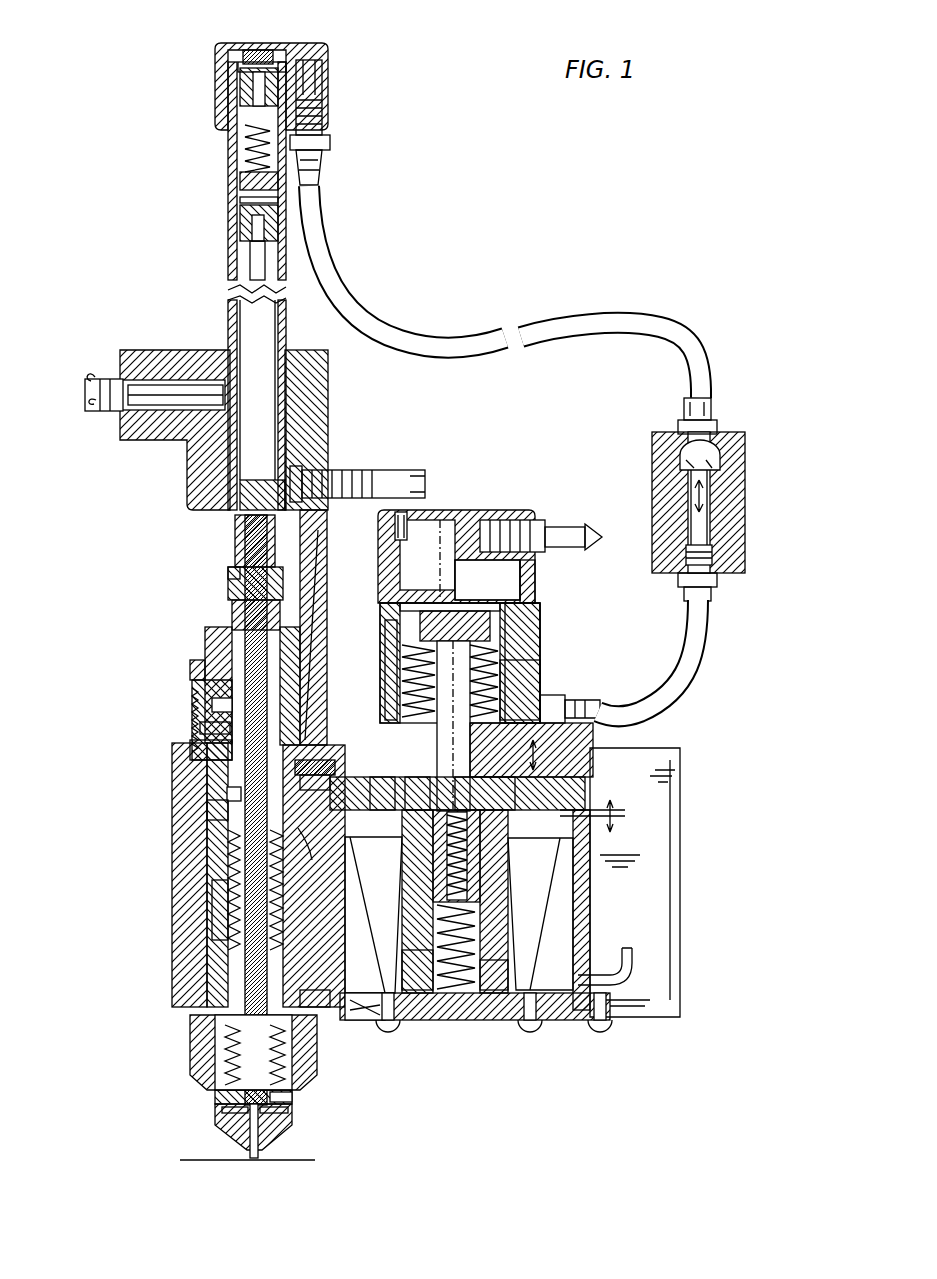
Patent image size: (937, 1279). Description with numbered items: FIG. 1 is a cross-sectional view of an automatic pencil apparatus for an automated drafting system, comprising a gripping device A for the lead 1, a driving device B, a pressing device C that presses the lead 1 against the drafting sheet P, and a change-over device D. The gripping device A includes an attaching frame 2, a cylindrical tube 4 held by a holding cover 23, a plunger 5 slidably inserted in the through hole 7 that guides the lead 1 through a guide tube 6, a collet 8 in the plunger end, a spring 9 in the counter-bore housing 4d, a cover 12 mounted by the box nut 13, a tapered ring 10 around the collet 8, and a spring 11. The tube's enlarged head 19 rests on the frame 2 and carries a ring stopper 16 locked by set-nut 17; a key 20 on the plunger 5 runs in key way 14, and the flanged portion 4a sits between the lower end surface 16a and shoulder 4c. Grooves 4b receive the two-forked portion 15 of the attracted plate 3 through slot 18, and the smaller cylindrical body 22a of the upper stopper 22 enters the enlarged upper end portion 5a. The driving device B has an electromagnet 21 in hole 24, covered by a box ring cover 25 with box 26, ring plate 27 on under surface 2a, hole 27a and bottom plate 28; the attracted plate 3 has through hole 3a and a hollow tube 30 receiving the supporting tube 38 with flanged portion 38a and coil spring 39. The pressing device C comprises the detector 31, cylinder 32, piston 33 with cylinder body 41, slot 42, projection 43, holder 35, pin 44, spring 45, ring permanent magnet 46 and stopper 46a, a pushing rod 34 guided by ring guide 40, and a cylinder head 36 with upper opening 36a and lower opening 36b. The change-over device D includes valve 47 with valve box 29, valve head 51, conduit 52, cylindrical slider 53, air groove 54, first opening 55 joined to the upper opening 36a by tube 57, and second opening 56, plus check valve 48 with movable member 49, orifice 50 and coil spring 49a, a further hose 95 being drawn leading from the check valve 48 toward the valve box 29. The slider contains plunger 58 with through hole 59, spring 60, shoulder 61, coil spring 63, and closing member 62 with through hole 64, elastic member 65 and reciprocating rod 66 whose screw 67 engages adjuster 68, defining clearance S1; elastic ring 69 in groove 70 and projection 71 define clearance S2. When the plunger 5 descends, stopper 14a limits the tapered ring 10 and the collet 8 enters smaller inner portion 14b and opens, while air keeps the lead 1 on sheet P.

The lead 1 is at (248, 955).
The attaching frame 2 is at (310, 600).
The under surface of the frame 2a is at (322, 1010).
The attracted plate 3 is at (590, 800).
The through hole 3a is at (510, 800).
The cylindrical tube 4 is at (200, 985).
The flanged portion 4a is at (224, 712).
The grooves 4b is at (227, 790).
The shoulder 4c is at (220, 728).
The counter-bore housing 4d is at (225, 915).
The plunger 5 is at (228, 585).
The enlarged upper end portion of the plunger 5a is at (312, 565).
The guide tube 6 is at (245, 607).
The through hole 7 is at (218, 810).
The collet 8 is at (292, 1098).
The spring 9 is at (230, 855).
The tapered ring 10 is at (225, 1097).
The spring 11 is at (225, 1070).
The cover 12 is at (275, 1125).
The box nut 13 is at (195, 1045).
The key way 14 is at (300, 740).
The stopper 14a is at (230, 1110).
The smaller inner portion of the cover 14b is at (290, 1110).
The two-forked portion 15 is at (312, 768).
The ring stopper 16 is at (210, 630).
The lower end surface of the stopper 16a is at (225, 703).
The set-nut 17 is at (192, 668).
The slot 18 is at (322, 790).
The enlarged head 19 is at (205, 755).
The key 20 is at (312, 845).
The electromagnet 21 is at (568, 990).
The upper stopper 22 is at (235, 527).
The smaller cylindrical body of the upper stopper 22a is at (228, 567).
The holding cover 23 is at (180, 840).
The hole 24 is at (375, 862).
The box ring cover 25 is at (585, 920).
The box 26 is at (508, 890).
The ring plate 27 is at (510, 1020).
The hole of the ring plate 27a is at (430, 1020).
The bottom plate 28 is at (475, 1017).
The valve box 29 is at (540, 665).
The hollow tube 30 is at (410, 930).
The detector 31 is at (160, 400).
The cylinder 32 is at (300, 382).
The piston 33 is at (240, 165).
The pushing rod 34 is at (285, 395).
The holder 35 is at (252, 242).
The cylinder head 36 is at (312, 46).
The upper opening 36a is at (310, 82).
The lower opening 36b is at (300, 470).
The supporting tube 38 is at (475, 940).
The flanged portion 38a is at (500, 985).
The coil spring 39 is at (418, 960).
The ring guide 40 is at (240, 490).
The cylinder body 41 is at (232, 178).
The slot 42 is at (240, 200).
The projection 43 is at (240, 92).
The pin 44 is at (240, 225).
The spring 45 is at (245, 140).
The ring permanent magnet 46 is at (228, 68).
The stopper 46a is at (258, 52).
The valve 47 is at (583, 660).
The check valve 48 is at (730, 462).
The movable member 49 is at (690, 462).
The coil spring 49a is at (690, 430).
The orifice 50 is at (695, 480).
The valve head 51 is at (404, 520).
The conduit 52 is at (478, 530).
The cylindrical slider 53 is at (390, 608).
The air groove 54 is at (435, 545).
The first opening 55 is at (585, 700).
The second opening 56 is at (538, 770).
The tube 57 is at (455, 335).
The plunger 58 is at (430, 745).
The through hole 59 is at (515, 660).
The spring 60 is at (535, 615).
The shoulder 61 is at (385, 640).
The closing member 62 is at (528, 600).
The coil spring 63 is at (520, 695).
The through hole 64 is at (398, 565).
The elastic member 65 is at (462, 598).
The reciprocating rod 66 is at (462, 790).
The screw 67 is at (448, 838).
The adjuster 68 is at (470, 850).
The elastic ring 69 is at (447, 722).
The groove 70 is at (378, 770).
The projection 71 is at (412, 770).
The hose 95 is at (702, 663).
The gripping device A is at (190, 656).
The driving device B is at (612, 896).
The pressing device C is at (222, 263).
The change-over device D is at (655, 442).
The drafting sheet P is at (225, 1162).
The clearance S1 is at (603, 823).
The clearance S2 is at (546, 750).